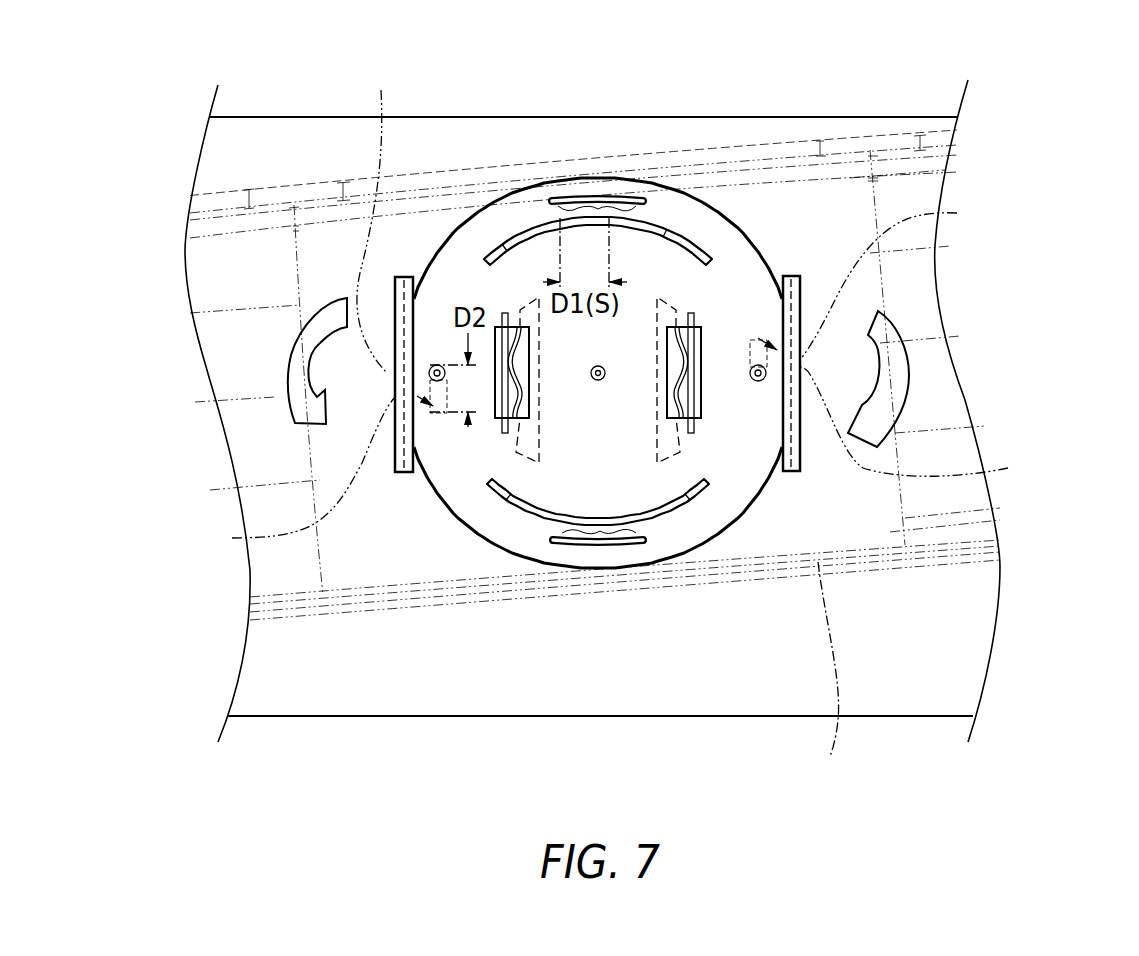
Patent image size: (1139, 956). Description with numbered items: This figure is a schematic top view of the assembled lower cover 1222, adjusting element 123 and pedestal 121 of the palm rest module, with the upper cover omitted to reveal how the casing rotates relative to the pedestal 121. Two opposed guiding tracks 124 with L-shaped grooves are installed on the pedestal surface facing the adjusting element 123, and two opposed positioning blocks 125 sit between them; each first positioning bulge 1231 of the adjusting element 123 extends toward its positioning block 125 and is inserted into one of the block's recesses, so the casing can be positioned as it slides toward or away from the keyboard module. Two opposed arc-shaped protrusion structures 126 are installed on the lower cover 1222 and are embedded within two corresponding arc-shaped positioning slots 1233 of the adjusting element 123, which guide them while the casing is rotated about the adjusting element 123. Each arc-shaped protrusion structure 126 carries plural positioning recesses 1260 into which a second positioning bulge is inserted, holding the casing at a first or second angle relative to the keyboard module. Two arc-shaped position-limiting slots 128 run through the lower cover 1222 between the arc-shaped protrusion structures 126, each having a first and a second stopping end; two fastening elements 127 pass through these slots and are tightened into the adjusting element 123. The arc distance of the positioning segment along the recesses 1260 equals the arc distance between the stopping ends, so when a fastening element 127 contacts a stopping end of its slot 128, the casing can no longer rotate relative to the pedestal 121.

The pedestal 121 is at (930, 698).
The lower cover 1222 is at (825, 680).
The adjusting element 123 is at (740, 468).
The guiding track 124 is at (410, 455).
The positioning block 125 is at (524, 327).
The arc-shaped protrusion structure 126 is at (663, 228).
The fastening element 127 is at (430, 376).
The arc-shaped position-limiting slot 128 is at (619, 313).
The first positioning bulge 1231 is at (500, 425).
The arc-shaped positioning slot 1233 is at (690, 241).
The positioning recess 1260 is at (548, 772).